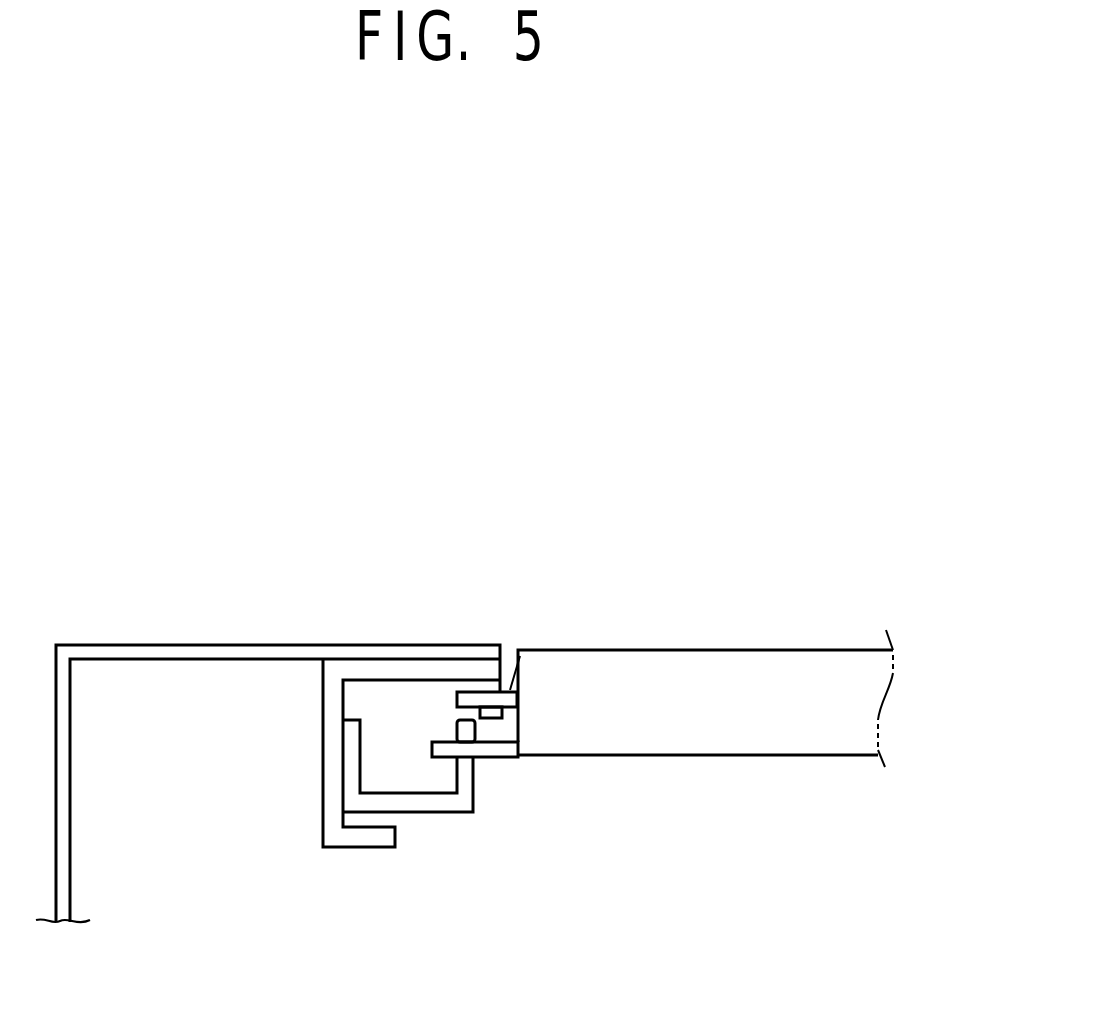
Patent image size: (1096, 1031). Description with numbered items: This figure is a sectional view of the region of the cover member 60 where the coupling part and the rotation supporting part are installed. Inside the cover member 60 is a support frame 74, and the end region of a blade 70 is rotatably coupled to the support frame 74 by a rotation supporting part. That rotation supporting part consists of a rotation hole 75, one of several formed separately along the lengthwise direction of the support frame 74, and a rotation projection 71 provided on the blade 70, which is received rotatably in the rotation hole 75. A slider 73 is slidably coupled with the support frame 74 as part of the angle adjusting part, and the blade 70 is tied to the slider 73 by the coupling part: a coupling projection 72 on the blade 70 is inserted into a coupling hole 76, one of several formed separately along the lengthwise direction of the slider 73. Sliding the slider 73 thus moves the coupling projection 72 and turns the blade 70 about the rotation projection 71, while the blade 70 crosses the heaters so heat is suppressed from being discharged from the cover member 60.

The cover member 60 is at (186, 648).
The blade 70 is at (700, 650).
The rotation projection 71 is at (518, 653).
The coupling projection 72 is at (503, 757).
The slider 73 is at (407, 802).
The support frame 74 is at (342, 673).
The rotation hole 75 is at (485, 690).
The coupling hole 76 is at (462, 757).